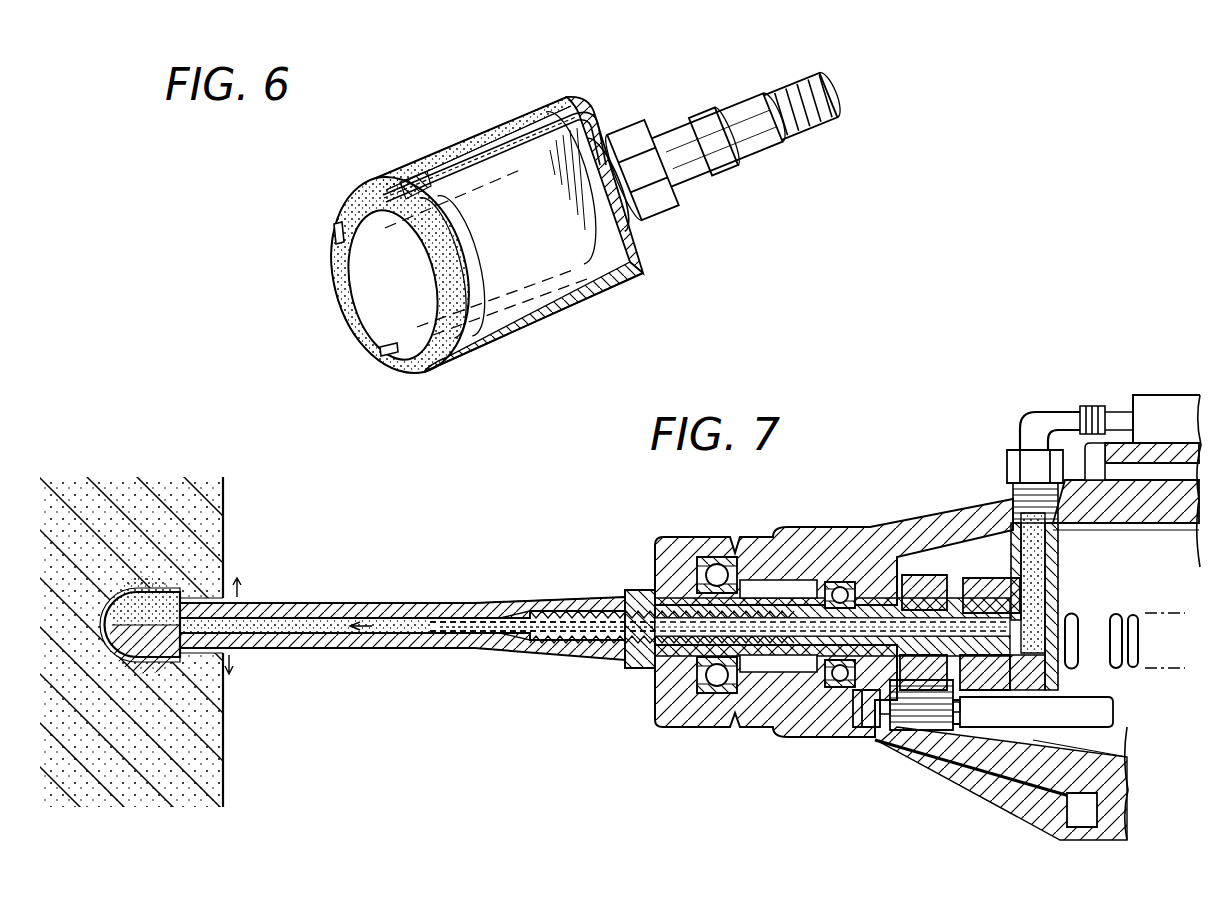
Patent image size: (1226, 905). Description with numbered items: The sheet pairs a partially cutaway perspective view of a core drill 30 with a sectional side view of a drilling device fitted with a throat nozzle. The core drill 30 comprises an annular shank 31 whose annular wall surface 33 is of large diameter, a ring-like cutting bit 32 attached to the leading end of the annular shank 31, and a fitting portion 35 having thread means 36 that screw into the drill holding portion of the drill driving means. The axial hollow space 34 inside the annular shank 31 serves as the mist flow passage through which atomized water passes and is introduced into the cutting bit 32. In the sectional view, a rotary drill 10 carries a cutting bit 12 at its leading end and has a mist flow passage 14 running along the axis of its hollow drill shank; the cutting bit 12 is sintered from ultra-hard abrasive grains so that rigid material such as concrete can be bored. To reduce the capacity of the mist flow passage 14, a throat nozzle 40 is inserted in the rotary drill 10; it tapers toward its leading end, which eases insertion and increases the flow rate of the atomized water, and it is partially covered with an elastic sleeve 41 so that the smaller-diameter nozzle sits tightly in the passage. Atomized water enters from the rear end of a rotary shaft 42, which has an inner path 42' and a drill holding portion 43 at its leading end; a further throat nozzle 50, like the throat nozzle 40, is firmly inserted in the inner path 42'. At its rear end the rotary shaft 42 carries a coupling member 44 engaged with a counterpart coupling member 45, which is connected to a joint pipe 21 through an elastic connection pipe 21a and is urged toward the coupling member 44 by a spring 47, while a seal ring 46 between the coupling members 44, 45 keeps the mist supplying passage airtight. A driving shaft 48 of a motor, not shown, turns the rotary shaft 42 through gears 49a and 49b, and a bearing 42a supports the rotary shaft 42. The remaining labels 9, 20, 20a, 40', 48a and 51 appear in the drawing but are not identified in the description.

In FIG. 6, the core drill 30 is at (627, 290).
In FIG. 6, the annular shank 31 is at (470, 150).
In FIG. 6, the annular wall surface 33 is at (478, 148).
In FIG. 6, the ring-like cutting bit 32 is at (356, 197).
In FIG. 6, the axial hollow space 34 is at (525, 136).
In FIG. 6, the fitting portion 35 is at (738, 110).
In FIG. 6, the thread means 36 is at (781, 85).
In FIG. 7, the bearing housing 9 is at (702, 727).
In FIG. 7, the rotary drill 10 is at (470, 601).
In FIG. 7, the cutting bit 12 is at (228, 688).
In FIG. 7, the mist flow passage 14 is at (333, 625).
In FIG. 7, the frame 20 is at (1140, 398).
In FIG. 7, the frame portion 20a is at (1166, 418).
In FIG. 7, the joint pipe 21 is at (1040, 412).
In FIG. 7, the elastic connection pipe 21a is at (1010, 522).
In FIG. 7, the throat nozzle 40 is at (720, 676).
In FIG. 7, the cable end 40' is at (493, 667).
In FIG. 7, the elastic sleeve 41 is at (630, 662).
In FIG. 7, the rotary shaft 42 is at (830, 525).
In FIG. 7, the inner path 42' is at (815, 760).
In FIG. 7, the bearing 42a is at (843, 690).
In FIG. 7, the drill holding portion 43 is at (772, 583).
In FIG. 7, the coupling member 44 is at (1008, 770).
In FIG. 7, the counterpart coupling member 45 is at (1040, 742).
In FIG. 7, the seal ring 46 is at (990, 728).
In FIG. 7, the spring 47 is at (1118, 668).
In FIG. 7, the driving shaft 48 is at (1072, 800).
In FIG. 7, the nut 48a is at (872, 728).
In FIG. 7, the gear 49a is at (905, 732).
In FIG. 7, the gear 49b is at (940, 730).
In FIG. 7, the throat nozzle 50 is at (905, 574).
In FIG. 7, the retainer 51 is at (960, 585).